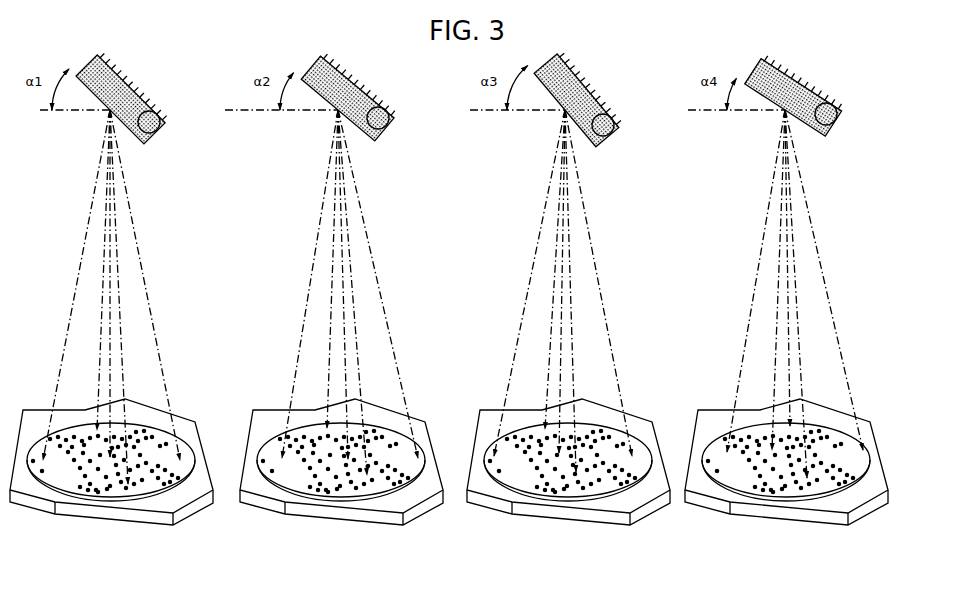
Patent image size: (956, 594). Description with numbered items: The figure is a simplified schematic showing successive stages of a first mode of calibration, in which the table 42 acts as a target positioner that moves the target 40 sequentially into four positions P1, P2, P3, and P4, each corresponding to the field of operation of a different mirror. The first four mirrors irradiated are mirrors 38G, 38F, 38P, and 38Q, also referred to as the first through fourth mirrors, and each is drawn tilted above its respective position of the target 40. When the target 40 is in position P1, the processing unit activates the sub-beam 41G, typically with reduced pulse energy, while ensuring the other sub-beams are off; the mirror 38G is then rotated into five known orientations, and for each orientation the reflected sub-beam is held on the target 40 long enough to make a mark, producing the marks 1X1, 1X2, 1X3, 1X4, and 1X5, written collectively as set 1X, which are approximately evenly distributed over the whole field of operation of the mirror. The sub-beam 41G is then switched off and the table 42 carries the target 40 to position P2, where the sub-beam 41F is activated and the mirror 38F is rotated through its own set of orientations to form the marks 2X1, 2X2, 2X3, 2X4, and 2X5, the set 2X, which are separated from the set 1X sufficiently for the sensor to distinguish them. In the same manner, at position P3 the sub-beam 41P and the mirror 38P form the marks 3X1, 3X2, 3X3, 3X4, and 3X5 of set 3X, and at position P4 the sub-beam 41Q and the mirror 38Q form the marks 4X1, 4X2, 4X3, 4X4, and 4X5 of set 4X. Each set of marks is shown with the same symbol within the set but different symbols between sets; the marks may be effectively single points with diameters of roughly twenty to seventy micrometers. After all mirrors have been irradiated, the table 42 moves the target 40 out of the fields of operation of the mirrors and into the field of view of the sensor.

The mirror 38G is at (127, 84).
The mirror 38F is at (355, 85).
The mirror 38P is at (582, 84).
The mirror 38Q is at (802, 85).
The sub-beam 41G is at (88, 111).
The sub-beam 41F is at (316, 111).
The sub-beam 41P is at (543, 111).
The sub-beam 41Q is at (763, 111).
The target 40 is at (164, 479).
The table 42 is at (449, 484).
The mark 1X1 is at (42, 455).
The mark 1X2 is at (96, 427).
The mark 1X3 is at (113, 454).
The mark 1X4 is at (130, 484).
The mark 1X5 is at (182, 456).
The mark 2X1 is at (281, 456).
The mark 2X2 is at (326, 426).
The mark 2X3 is at (351, 457).
The mark 2X4 is at (368, 476).
The mark 2X5 is at (419, 455).
The mark 3X1 is at (633, 454).
The mark 3X2 is at (544, 427).
The mark 3X3 is at (577, 475).
The mark 3X4 is at (561, 451).
The mark 3X5 is at (493, 453).
The mark 4X1 is at (726, 450).
The mark 4X2 is at (789, 424).
The mark 4X3 is at (774, 448).
The mark 4X4 is at (809, 478).
The mark 4X5 is at (864, 448).
The set of marks 1X is at (63, 523).
The set of marks 2X is at (317, 531).
The set of marks 3X is at (588, 531).
The set of marks 4X is at (838, 530).
The position P1 is at (117, 533).
The position P2 is at (348, 534).
The position P3 is at (575, 534).
The position P4 is at (795, 535).